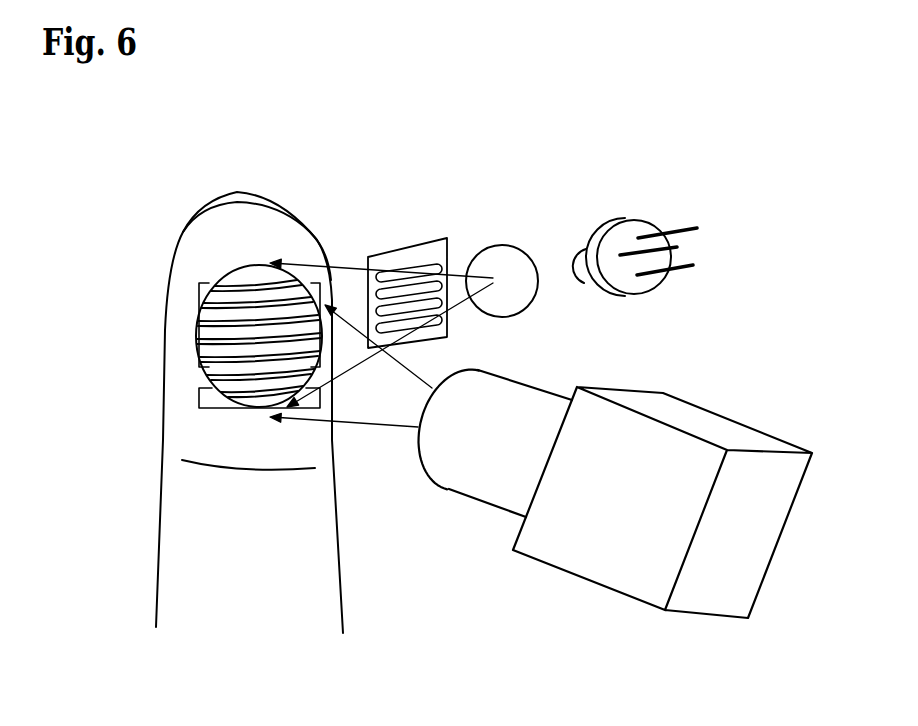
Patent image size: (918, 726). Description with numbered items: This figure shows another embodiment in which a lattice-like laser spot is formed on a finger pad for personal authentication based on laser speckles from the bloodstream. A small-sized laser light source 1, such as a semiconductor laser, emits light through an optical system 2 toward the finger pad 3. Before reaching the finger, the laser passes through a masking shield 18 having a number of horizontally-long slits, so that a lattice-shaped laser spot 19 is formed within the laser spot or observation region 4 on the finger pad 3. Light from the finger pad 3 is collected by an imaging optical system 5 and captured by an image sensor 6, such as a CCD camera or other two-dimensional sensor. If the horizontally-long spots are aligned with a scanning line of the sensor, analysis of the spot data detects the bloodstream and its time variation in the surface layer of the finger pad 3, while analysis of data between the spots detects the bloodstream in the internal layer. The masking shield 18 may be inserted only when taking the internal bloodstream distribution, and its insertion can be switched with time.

The laser light source 1 is at (632, 224).
The optical system 2 is at (499, 250).
The finger pad 3 is at (289, 234).
The laser spot 4 is at (299, 305).
The imaging optical system 5 is at (522, 402).
The image sensor 6 is at (688, 412).
The masking shield 18 is at (411, 254).
The lattice-shaped laser spot 19 is at (227, 290).